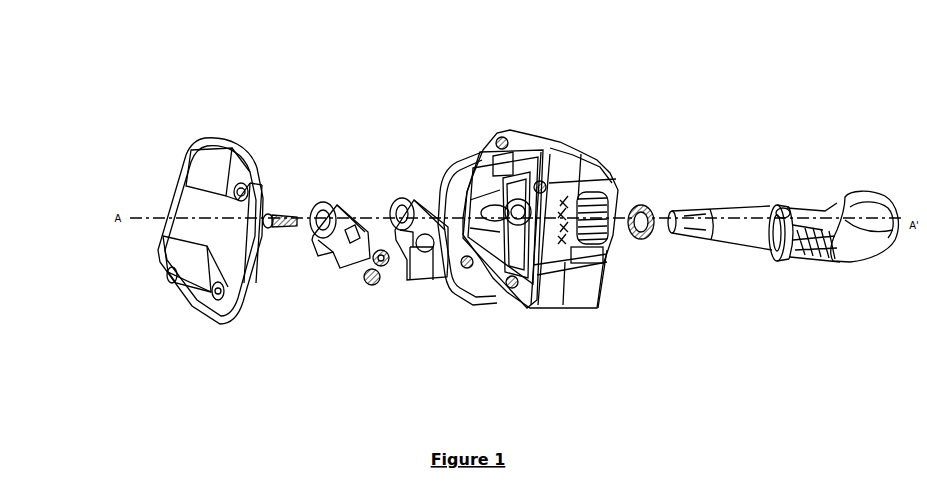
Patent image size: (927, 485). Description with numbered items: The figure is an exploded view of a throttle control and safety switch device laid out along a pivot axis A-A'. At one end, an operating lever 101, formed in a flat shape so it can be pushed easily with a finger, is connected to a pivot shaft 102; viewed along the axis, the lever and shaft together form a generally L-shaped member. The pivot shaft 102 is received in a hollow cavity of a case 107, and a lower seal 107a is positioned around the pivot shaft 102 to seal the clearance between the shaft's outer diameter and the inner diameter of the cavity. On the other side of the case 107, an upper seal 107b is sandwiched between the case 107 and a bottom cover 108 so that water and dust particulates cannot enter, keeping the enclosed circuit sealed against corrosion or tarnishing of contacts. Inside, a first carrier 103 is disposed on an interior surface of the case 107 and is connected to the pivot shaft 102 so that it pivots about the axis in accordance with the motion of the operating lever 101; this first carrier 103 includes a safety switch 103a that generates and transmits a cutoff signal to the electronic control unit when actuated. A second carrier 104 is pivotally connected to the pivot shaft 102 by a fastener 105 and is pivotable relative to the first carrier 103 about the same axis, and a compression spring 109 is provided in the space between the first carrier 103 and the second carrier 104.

The operating lever 101 is at (843, 264).
The pivot shaft 102 is at (733, 243).
The first carrier 103 is at (421, 283).
The safety switch 103a is at (382, 249).
The second carrier 104 is at (338, 265).
The fastener 105 is at (277, 213).
The case 107 is at (557, 145).
The lower seal 107a is at (645, 204).
The upper seal 107b is at (485, 304).
The bottom cover 108 is at (190, 152).
The compression spring 109 is at (372, 286).